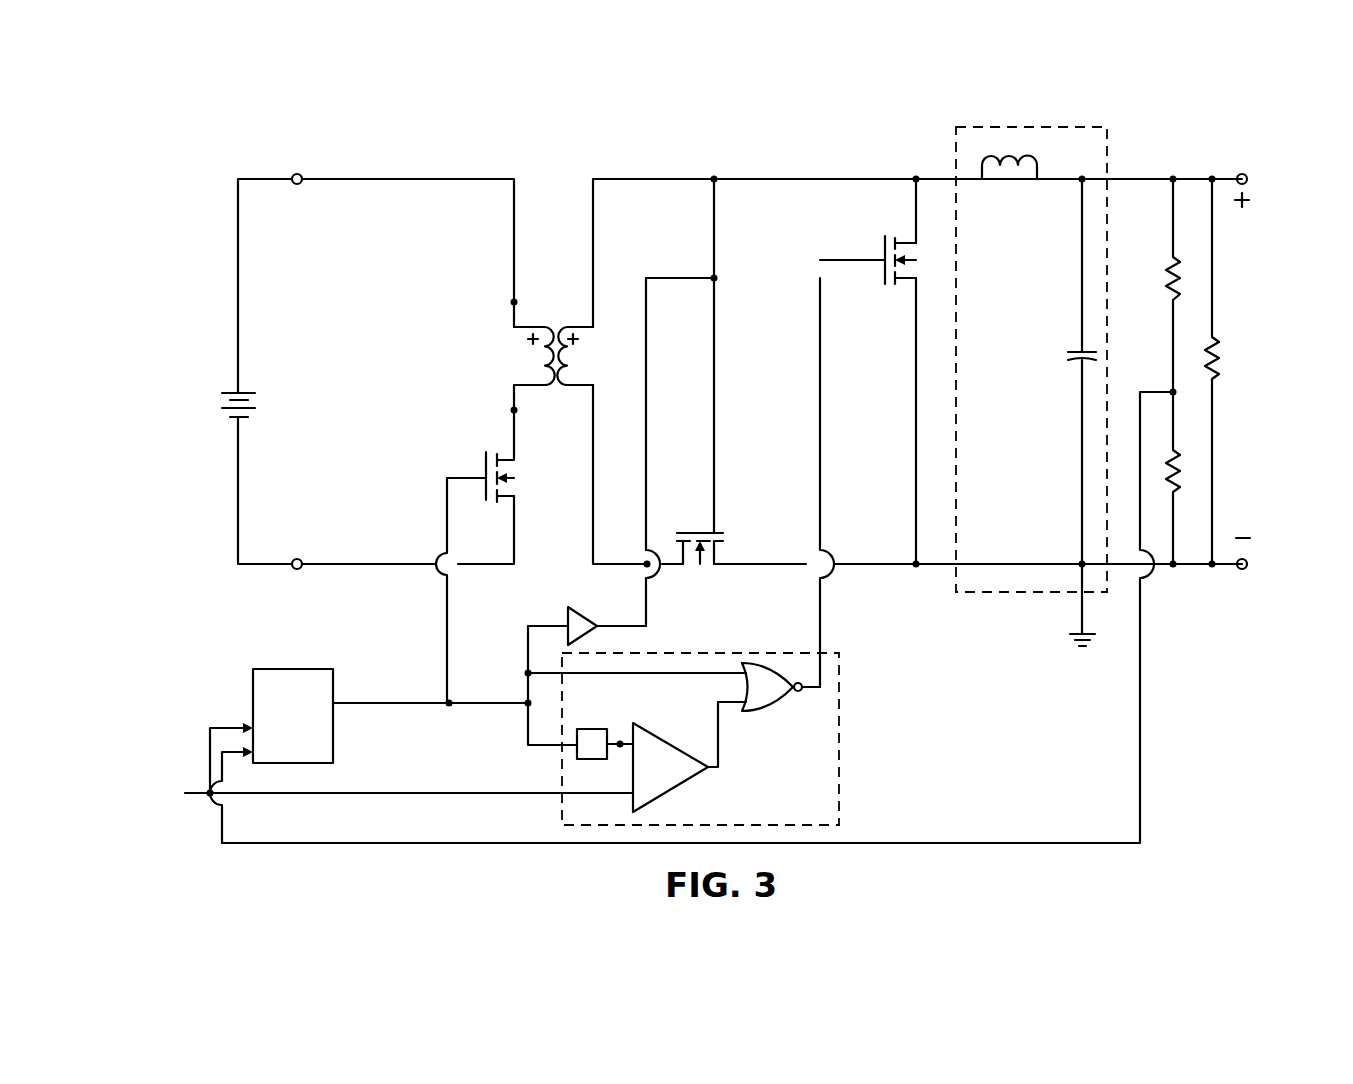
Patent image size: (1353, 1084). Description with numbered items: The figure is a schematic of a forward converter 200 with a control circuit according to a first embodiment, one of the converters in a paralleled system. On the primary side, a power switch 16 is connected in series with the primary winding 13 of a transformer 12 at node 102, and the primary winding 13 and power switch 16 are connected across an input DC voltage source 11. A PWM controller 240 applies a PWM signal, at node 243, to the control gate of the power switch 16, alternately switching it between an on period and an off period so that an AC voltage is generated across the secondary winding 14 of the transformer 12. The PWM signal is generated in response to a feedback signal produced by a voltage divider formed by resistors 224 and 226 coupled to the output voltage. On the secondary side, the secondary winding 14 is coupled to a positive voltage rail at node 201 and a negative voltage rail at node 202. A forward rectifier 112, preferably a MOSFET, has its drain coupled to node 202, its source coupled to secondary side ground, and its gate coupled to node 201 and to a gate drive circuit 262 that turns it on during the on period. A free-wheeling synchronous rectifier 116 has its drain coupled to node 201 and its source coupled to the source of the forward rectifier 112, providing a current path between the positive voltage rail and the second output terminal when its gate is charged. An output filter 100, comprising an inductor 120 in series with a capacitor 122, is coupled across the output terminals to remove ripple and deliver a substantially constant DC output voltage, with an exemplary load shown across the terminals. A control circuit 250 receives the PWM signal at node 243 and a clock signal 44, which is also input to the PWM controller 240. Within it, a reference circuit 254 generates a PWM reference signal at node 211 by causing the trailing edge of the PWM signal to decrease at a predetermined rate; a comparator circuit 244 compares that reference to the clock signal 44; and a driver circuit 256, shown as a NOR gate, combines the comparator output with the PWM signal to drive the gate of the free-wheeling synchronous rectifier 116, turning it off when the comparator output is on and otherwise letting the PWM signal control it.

The input DC voltage source 11 is at (246, 390).
The transformer 12 is at (556, 331).
The primary winding 13 is at (542, 356).
The secondary winding 14 is at (570, 356).
The power switch 16 is at (484, 470).
The clock signal 44 is at (208, 788).
The output filter 100 is at (1031, 386).
The node 102 is at (510, 414).
The forward rectifier 112 is at (698, 528).
The free-wheeling synchronous rectifier 116 is at (884, 262).
The inductor 120 is at (1016, 160).
The capacitor 122 is at (1074, 348).
The converter 200 is at (836, 140).
The node 201 is at (714, 175).
The node 202 is at (652, 570).
The node 211 is at (620, 750).
The resistor 224 is at (1166, 274).
The resistor 226 is at (1178, 455).
The PWM controller 240 is at (262, 667).
The node 243 is at (526, 700).
The comparator circuit 244 is at (692, 780).
The control circuit 250 is at (734, 739).
The reference circuit 254 is at (593, 729).
The driver circuit 256 is at (775, 710).
The gate drive circuit 262 is at (566, 623).